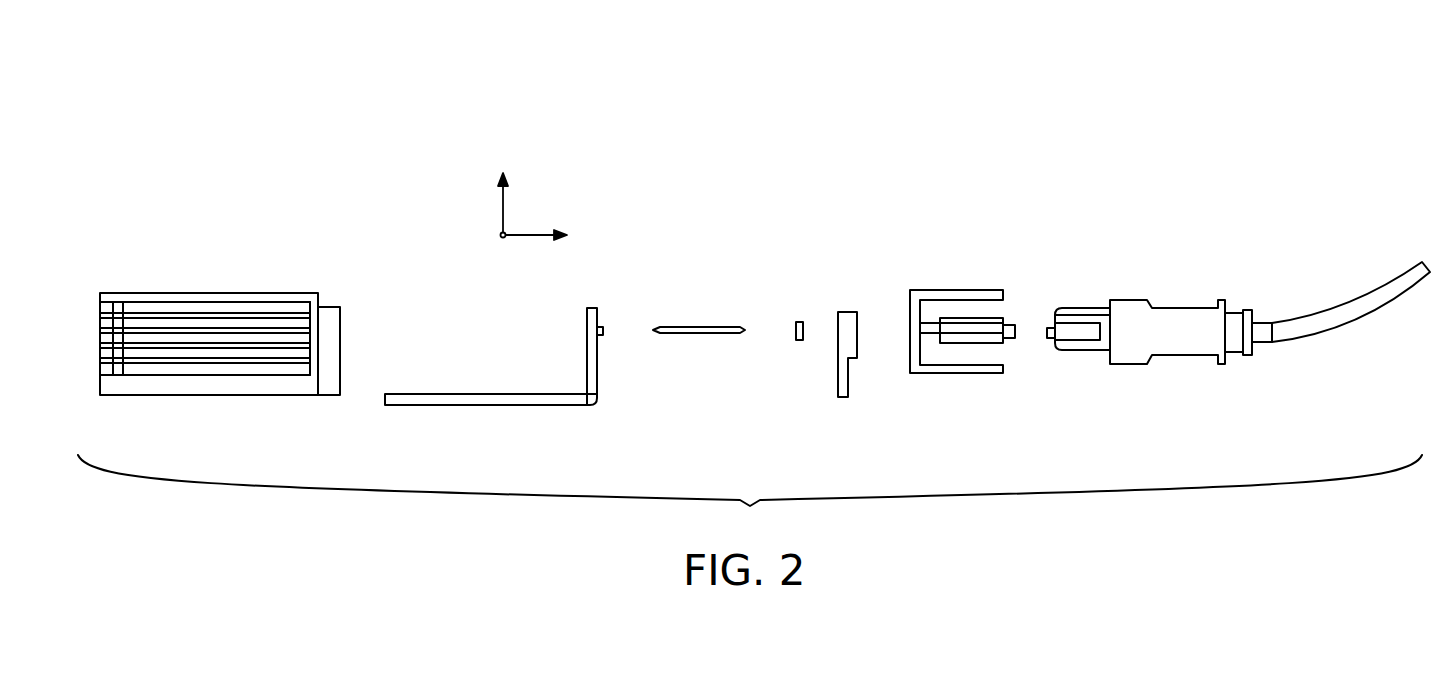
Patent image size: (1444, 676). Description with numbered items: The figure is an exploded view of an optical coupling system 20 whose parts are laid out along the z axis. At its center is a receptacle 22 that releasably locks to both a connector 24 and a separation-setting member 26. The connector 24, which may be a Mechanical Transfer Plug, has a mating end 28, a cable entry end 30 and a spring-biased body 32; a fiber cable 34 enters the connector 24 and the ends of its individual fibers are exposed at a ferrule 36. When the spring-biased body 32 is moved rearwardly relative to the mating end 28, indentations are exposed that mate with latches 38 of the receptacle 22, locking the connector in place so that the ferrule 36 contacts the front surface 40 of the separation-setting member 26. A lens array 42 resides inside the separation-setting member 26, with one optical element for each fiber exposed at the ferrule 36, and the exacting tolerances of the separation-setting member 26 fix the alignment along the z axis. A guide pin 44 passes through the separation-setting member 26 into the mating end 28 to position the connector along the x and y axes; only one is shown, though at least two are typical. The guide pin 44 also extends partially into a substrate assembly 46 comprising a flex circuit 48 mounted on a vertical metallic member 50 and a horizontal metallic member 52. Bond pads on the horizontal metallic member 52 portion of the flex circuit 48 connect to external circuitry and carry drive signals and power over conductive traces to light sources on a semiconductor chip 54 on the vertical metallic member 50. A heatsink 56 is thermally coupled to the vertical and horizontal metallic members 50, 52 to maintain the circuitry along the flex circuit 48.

The optical coupling system 20 is at (1204, 66).
The receptacle 22 is at (995, 293).
The connector 24 is at (1207, 336).
The separation-setting member 26 is at (884, 339).
The mating end 28 is at (1095, 352).
The cable entry end 30 is at (1241, 356).
The spring-biased body 32 is at (1160, 352).
The fiber cable 34 is at (1373, 315).
The ferrule 36 is at (1049, 336).
The latches 38 is at (1013, 325).
The front surface 40 is at (857, 345).
The lens array 42 is at (796, 338).
The guide pin 44 is at (713, 327).
The substrate assembly 46 is at (528, 356).
The flex circuit 48 is at (593, 403).
The vertical metallic member 50 is at (590, 367).
The horizontal metallic member 52 is at (397, 396).
The semiconductor chip 54 is at (601, 330).
The heatsink 56 is at (221, 293).